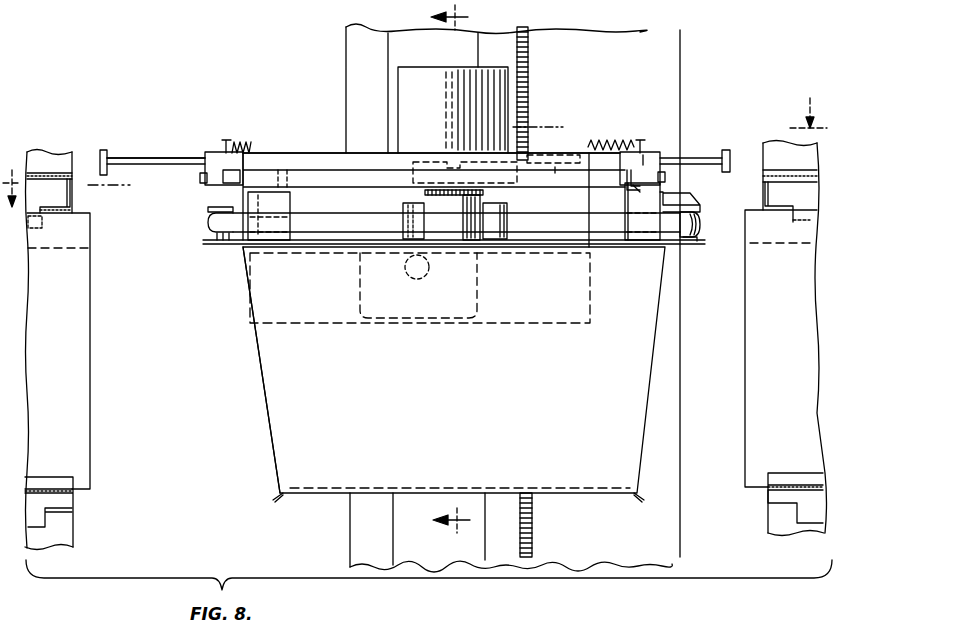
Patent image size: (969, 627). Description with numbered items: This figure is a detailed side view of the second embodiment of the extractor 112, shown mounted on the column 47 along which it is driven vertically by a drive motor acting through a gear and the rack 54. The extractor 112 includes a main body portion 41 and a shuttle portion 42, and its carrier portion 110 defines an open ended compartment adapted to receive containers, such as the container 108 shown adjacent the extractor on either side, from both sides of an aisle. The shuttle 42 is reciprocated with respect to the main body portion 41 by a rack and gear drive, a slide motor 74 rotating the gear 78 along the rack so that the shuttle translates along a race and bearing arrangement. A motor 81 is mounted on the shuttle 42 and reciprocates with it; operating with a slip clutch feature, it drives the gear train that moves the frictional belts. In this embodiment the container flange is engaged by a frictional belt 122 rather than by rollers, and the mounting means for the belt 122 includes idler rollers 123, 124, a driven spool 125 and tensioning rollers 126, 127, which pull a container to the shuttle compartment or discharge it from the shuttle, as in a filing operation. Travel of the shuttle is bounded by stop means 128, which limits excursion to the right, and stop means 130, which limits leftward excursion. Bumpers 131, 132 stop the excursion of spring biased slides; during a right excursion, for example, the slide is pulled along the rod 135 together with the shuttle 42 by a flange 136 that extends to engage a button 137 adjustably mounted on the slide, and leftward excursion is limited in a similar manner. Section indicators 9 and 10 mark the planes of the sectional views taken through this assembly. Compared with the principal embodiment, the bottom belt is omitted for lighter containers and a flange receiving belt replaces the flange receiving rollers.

The column 47 is at (648, 549).
The rack 54 is at (530, 67).
The motor 81 is at (438, 121).
The section line 10- 10 is at (437, 269).
The section line 9- 9 is at (415, 164).
The container 108 is at (70, 384).
The carrier portion 110 is at (506, 448).
The shuttle portion 42 is at (243, 290).
The slide motor 74 is at (388, 302).
The gear 78 is at (417, 280).
The main body portion 41 is at (269, 153).
The extractor 112 is at (308, 126).
The stop means 130 is at (219, 143).
The bumper 132 is at (107, 150).
The rod 135 is at (166, 166).
The stop means 128 is at (656, 147).
The bumper 131 is at (733, 148).
The flange 136 is at (628, 181).
The button 137 is at (635, 189).
The tensioning roller 126 is at (403, 206).
The tensioning roller 127 is at (508, 209).
The driven spool 125 is at (466, 235).
The frictional belt 122 is at (230, 218).
The idler roller 124 is at (700, 230).
The idler roller 123 is at (231, 245).